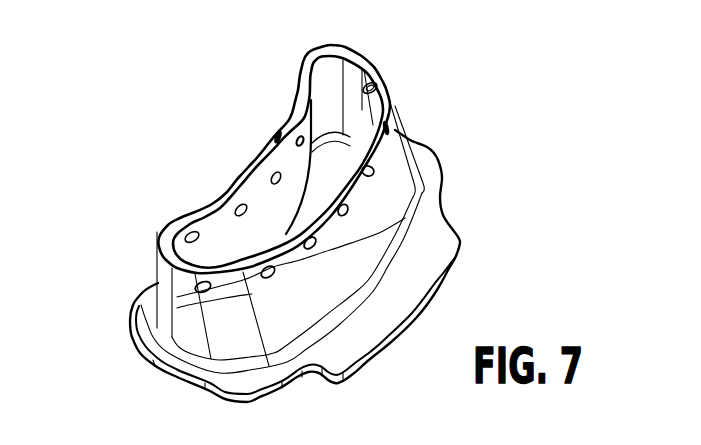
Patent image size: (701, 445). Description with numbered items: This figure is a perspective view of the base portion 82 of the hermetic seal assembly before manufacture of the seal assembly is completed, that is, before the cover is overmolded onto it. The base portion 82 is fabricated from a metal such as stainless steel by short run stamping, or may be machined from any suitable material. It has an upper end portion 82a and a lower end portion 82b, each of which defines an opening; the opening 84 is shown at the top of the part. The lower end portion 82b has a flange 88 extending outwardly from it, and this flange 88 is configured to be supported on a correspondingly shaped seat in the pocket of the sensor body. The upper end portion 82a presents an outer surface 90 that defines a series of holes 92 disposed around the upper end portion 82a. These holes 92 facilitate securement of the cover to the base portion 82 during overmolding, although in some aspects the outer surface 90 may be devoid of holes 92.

The base portion 82 is at (278, 214).
The upper end portion 82a is at (163, 260).
The lower end portion 82b is at (213, 355).
The opening 84 is at (332, 64).
The flange 88 is at (417, 266).
The outer surface 90 is at (160, 276).
The holes 92 is at (371, 171).